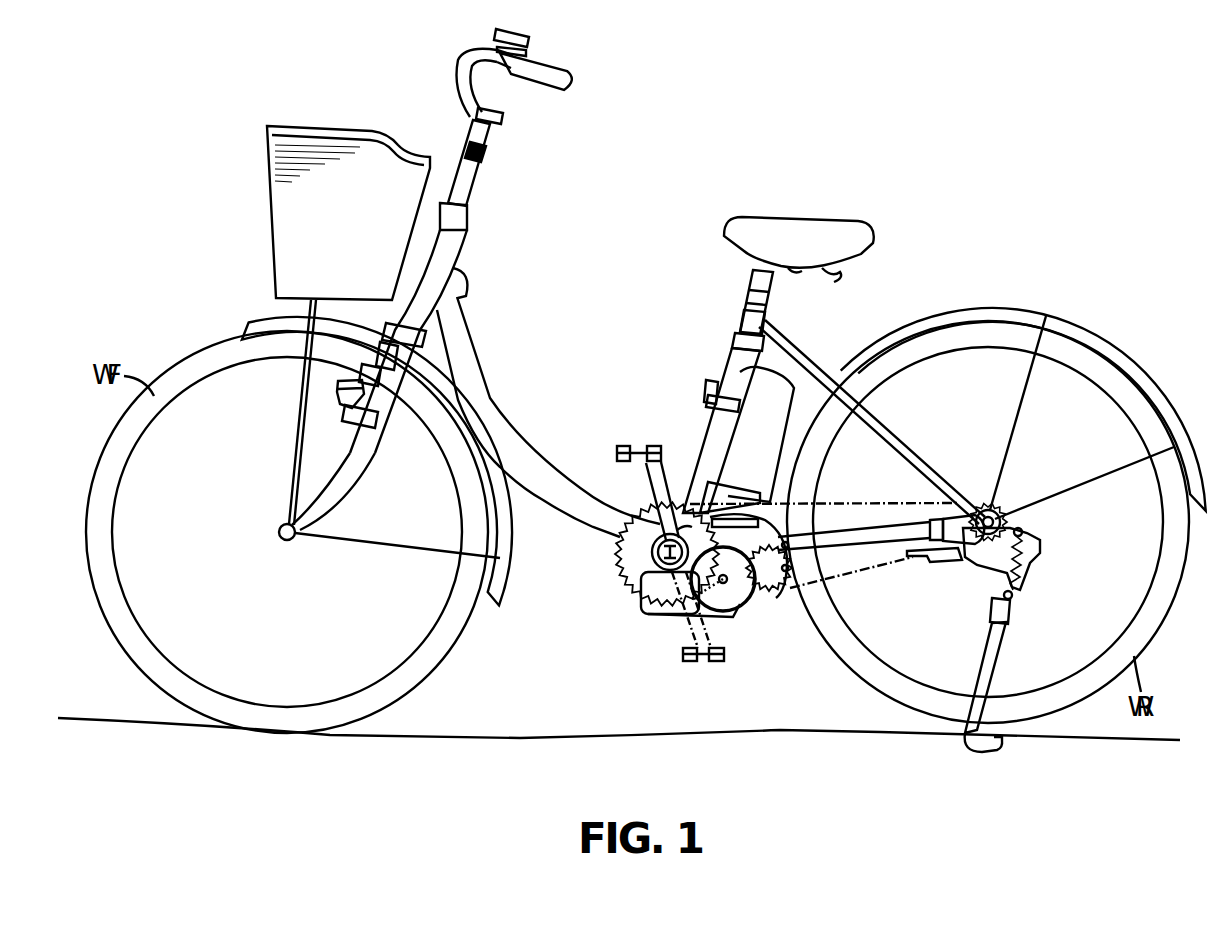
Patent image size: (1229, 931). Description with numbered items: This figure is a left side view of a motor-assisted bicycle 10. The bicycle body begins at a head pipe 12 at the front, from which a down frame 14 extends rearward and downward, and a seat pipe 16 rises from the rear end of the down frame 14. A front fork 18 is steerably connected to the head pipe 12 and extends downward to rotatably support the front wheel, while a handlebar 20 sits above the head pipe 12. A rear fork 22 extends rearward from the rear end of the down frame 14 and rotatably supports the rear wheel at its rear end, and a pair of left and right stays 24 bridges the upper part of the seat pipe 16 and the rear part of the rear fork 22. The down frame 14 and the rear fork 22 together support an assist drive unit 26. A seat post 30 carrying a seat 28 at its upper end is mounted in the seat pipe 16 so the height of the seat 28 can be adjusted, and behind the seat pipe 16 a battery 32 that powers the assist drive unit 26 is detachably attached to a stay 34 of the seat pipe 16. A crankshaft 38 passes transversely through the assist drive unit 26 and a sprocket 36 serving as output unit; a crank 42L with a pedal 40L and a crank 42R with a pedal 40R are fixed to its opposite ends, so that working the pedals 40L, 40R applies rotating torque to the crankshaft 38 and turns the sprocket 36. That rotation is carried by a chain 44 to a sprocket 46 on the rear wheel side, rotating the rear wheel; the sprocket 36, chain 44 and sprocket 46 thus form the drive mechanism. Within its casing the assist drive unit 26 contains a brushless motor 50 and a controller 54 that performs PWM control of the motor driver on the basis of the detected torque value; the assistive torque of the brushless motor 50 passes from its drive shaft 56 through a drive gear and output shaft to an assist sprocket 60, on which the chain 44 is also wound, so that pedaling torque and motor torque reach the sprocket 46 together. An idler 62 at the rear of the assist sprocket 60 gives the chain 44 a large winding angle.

The motor-assisted bicycle 10 is at (692, 69).
The head pipe 12 is at (445, 247).
The down frame 14 is at (520, 420).
The seat pipe 16 is at (735, 362).
The front fork 18 is at (390, 403).
The handlebar 20 is at (547, 63).
The rear fork 22 is at (893, 527).
The stays 24 is at (822, 373).
The assist drive unit 26 is at (647, 633).
The seat 28 is at (768, 222).
The seat post 30 is at (757, 277).
The battery 32 is at (795, 367).
The stay 34 is at (723, 497).
The sprocket 36 is at (620, 555).
The crankshaft 38 is at (628, 573).
The pedal 40R is at (653, 444).
The pedal 40L is at (717, 670).
The crank 42R is at (690, 503).
The crank 42L is at (675, 633).
The chain 44 is at (898, 560).
The sprocket 46 is at (1010, 512).
The brushless motor 50 is at (733, 603).
The controller 54 is at (643, 614).
The drive shaft 56 is at (753, 600).
The assist sprocket 60 is at (796, 490).
The idler 62 is at (787, 585).